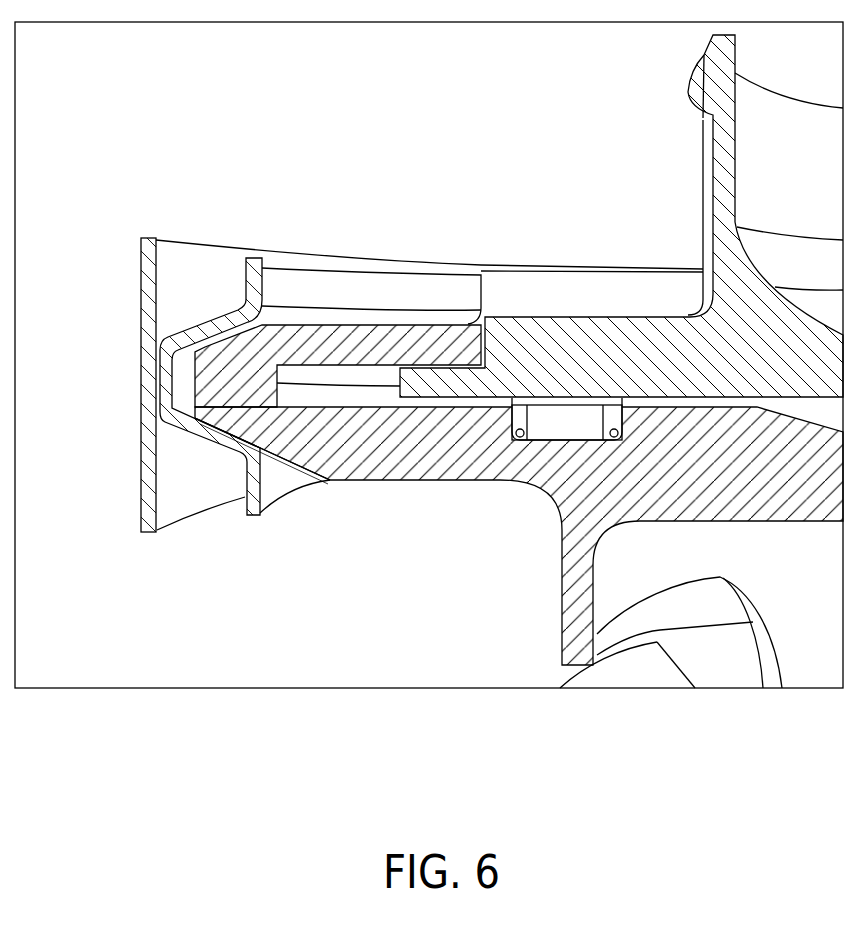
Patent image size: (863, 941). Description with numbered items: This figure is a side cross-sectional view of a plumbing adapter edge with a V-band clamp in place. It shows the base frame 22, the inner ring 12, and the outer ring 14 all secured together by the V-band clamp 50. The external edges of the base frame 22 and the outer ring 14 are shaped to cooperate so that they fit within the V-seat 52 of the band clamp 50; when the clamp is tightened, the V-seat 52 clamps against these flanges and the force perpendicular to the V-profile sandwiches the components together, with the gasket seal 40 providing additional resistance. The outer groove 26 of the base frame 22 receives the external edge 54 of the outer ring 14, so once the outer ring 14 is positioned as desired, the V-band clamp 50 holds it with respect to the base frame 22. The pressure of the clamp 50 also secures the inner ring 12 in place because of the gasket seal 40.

The inner ring 12 is at (602, 355).
The outer ring 14 is at (386, 348).
The base frame 22 is at (420, 443).
The outer groove 26 is at (207, 428).
The gasket seal 40 is at (576, 420).
The V-band clamp 50 is at (141, 275).
The V-seat 52 is at (181, 378).
The external edge 54 is at (192, 432).